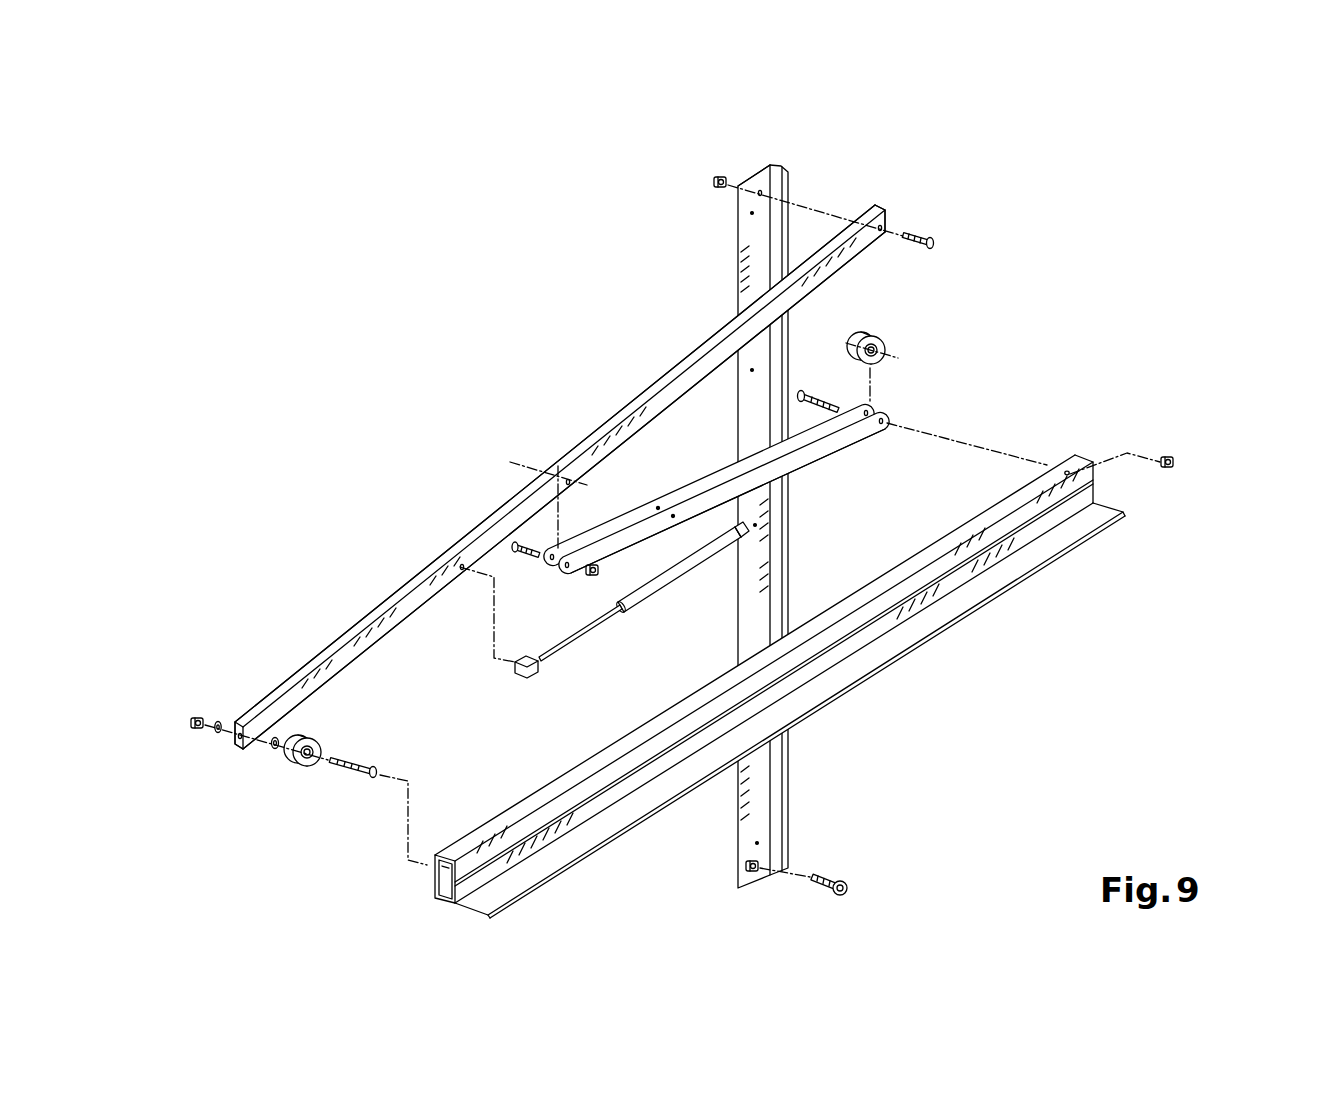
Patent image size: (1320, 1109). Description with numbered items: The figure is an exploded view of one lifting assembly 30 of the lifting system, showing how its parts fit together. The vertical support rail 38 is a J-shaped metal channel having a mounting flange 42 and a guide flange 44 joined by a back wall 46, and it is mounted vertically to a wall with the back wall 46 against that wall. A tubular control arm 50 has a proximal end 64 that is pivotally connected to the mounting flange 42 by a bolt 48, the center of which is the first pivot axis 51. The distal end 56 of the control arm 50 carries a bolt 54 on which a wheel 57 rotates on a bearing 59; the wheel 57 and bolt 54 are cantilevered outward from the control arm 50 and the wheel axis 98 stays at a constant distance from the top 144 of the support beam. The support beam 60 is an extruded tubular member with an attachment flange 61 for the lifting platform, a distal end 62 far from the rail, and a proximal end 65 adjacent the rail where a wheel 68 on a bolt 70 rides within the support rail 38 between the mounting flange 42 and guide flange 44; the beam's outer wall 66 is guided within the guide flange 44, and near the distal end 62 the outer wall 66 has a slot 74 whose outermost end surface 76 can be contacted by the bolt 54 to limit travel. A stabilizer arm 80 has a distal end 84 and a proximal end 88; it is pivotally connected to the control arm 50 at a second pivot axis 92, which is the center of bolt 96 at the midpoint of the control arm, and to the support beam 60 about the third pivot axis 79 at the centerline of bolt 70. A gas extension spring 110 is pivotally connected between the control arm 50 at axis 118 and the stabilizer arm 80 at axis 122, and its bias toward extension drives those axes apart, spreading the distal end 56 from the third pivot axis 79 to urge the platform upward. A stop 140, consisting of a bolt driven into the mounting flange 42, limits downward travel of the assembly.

The lifting assembly 30 is at (400, 423).
The vertical support rail 38 is at (742, 168).
The mounting flange 42 is at (748, 226).
The guide flange 44 is at (789, 570).
The back wall 46 is at (784, 168).
The bolt 48 is at (935, 242).
The control arm 50 is at (638, 402).
The first pivot axis 51 is at (815, 203).
The bolt 54 is at (357, 755).
The distal end 56 is at (238, 696).
The wheel 57 is at (298, 772).
The bearing 59 is at (273, 748).
The support beam 60 is at (938, 615).
The attachment flange 61 is at (850, 670).
The distal end 62 is at (518, 926).
The proximal end 64 is at (873, 198).
The proximal end 65 is at (1128, 527).
The outer wall 66 is at (437, 893).
The wheel 68 is at (886, 345).
The bolt 70 is at (806, 392).
The slot 74 is at (434, 873).
The outermost end surface 76 is at (443, 866).
The third pivot axis 79 is at (962, 443).
The stabilizer arm 80 is at (807, 455).
The distal end 84 is at (572, 538).
The proximal end 88 is at (856, 446).
The second pivot axis 92 is at (510, 462).
The bolt 96 is at (516, 545).
The axis 98 is at (394, 774).
The extension spring 110 is at (660, 587).
The axis 118 is at (460, 567).
The axis 122 is at (717, 527).
The stop 140 is at (841, 897).
The top 144 is at (600, 753).